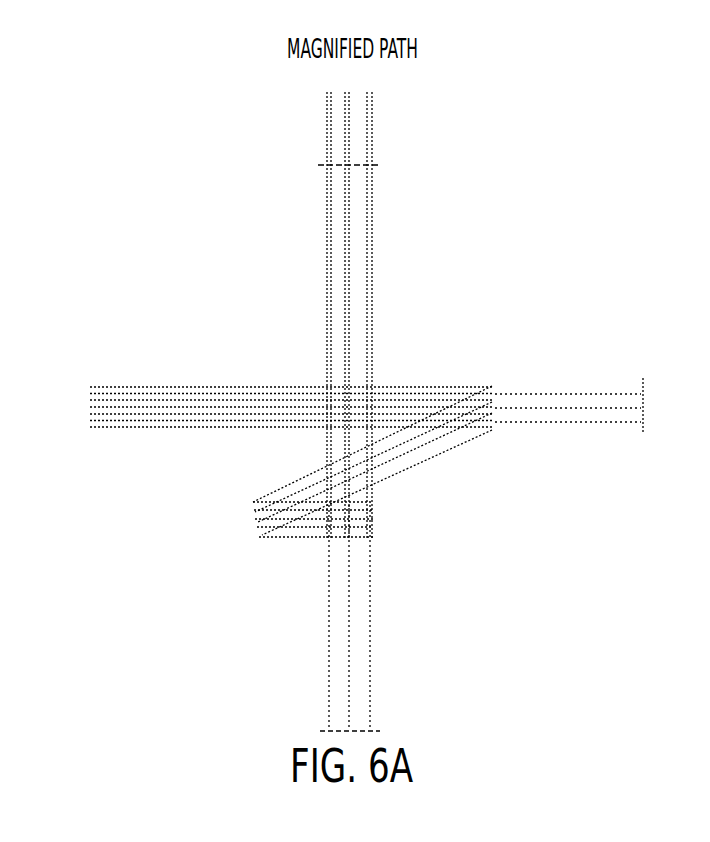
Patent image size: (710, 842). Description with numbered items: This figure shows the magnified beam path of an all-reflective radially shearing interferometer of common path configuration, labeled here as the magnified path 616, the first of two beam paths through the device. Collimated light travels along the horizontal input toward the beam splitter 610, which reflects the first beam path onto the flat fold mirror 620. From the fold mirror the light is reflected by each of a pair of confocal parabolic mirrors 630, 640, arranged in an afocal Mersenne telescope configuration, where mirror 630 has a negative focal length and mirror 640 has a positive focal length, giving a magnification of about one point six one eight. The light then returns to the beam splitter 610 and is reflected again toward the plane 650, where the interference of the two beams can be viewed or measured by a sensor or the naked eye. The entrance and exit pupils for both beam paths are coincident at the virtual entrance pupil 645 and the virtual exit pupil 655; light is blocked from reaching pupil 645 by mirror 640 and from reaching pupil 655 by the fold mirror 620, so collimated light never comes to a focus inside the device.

The magnified optical path (of system 600) 616 is at (141, 286).
The beam splitter 610 is at (323, 373).
The flat fold mirror 620 is at (363, 505).
The confocal parabolic mirror 630 is at (255, 520).
The confocal parabolic mirror 640 is at (492, 366).
The virtual entrance pupil 645 is at (633, 376).
The plane 650 is at (380, 161).
The virtual exit pupil 655 is at (386, 712).